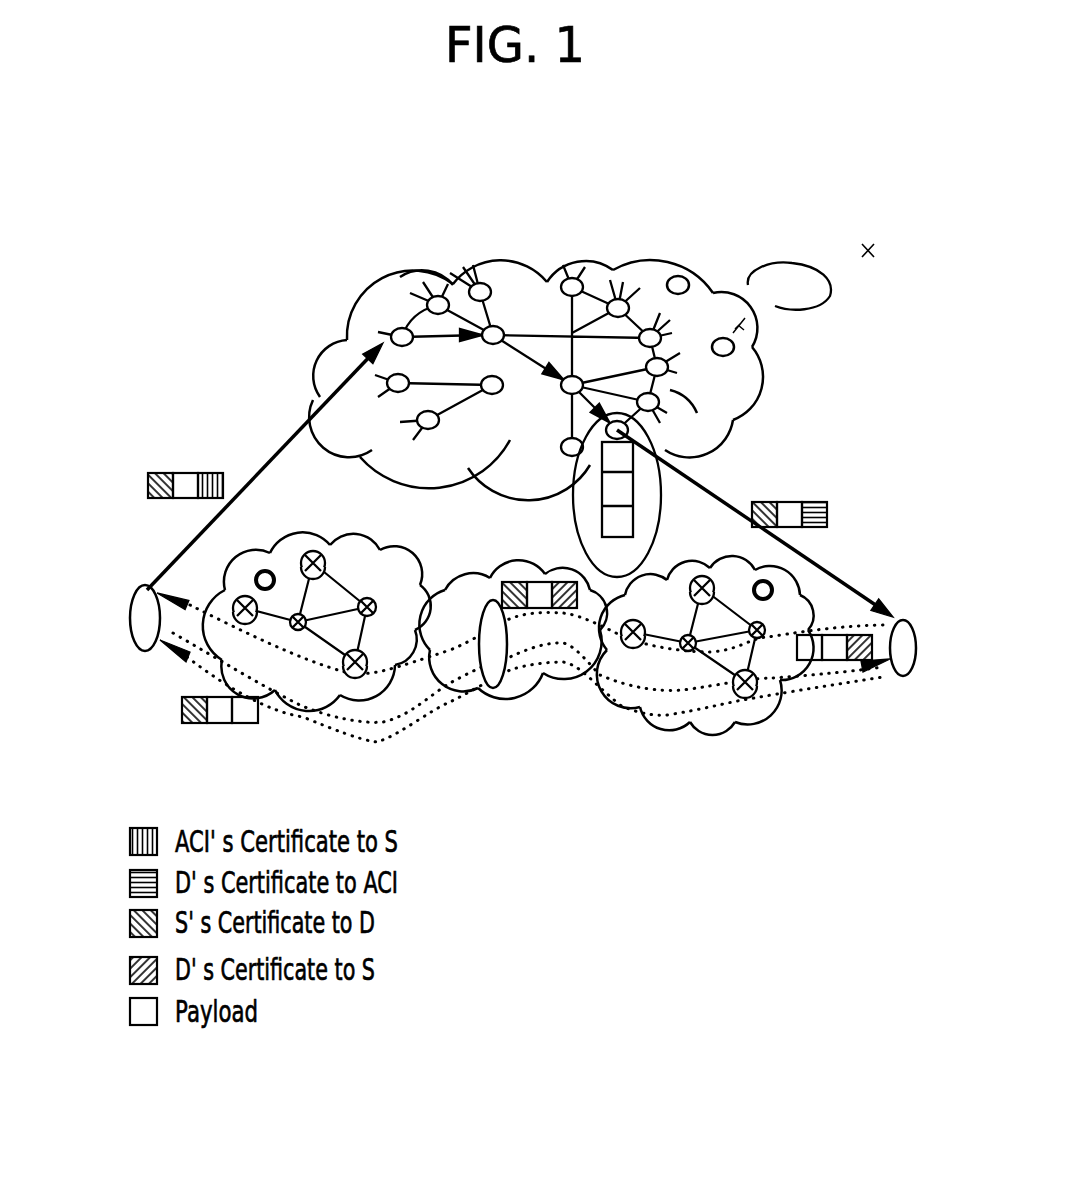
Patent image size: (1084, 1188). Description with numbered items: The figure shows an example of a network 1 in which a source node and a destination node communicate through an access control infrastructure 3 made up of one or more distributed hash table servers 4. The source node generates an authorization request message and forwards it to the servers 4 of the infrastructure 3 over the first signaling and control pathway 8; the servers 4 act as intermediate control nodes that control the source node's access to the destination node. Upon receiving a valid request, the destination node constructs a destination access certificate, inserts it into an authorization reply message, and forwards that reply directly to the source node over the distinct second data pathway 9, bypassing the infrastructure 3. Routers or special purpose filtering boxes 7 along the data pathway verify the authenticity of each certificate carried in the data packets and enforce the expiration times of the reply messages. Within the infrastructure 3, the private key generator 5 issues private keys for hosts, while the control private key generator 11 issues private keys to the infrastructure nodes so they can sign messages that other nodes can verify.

The network 1 is at (760, 150).
The ACI 3 is at (615, 217).
The DHT servers 4 is at (470, 470).
The PKG 5 is at (738, 343).
The routers 7 is at (373, 542).
The pathway 8 is at (318, 409).
The pathway 9 is at (490, 685).
The aci-control-PKG 11 is at (703, 280).